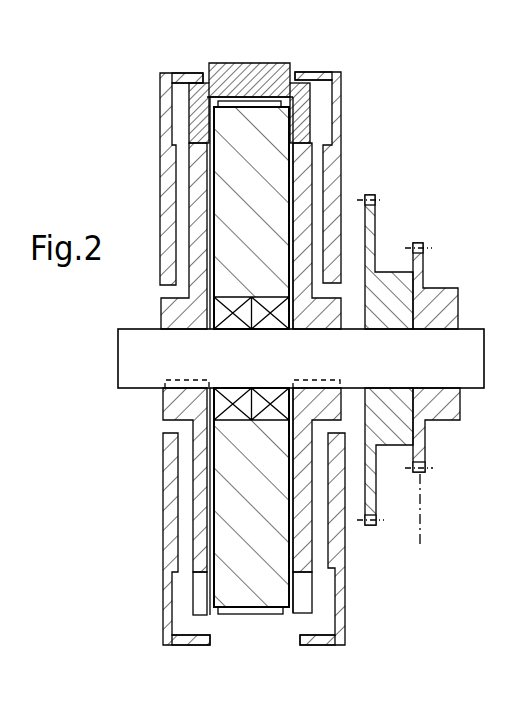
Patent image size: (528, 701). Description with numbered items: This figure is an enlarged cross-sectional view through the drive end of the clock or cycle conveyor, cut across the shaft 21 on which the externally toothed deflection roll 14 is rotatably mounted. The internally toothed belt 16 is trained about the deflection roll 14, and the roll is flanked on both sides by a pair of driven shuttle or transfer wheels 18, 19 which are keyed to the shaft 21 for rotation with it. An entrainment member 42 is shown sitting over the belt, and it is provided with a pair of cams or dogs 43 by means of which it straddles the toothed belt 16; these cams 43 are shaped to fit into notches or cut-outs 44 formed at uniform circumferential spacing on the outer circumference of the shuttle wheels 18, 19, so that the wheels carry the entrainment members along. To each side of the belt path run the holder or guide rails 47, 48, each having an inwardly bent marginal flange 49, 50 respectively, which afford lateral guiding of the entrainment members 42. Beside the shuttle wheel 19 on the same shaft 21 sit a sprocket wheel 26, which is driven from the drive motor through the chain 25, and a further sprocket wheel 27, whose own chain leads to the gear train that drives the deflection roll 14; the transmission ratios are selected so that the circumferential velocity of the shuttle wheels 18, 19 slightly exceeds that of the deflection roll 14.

The deflection roll 14 is at (272, 193).
The toothed belt 16 is at (305, 92).
The shuttle wheel 18 is at (191, 168).
The shuttle wheel 19 is at (310, 216).
The shaft 21 is at (471, 376).
The chain 25 is at (424, 500).
The sprocket wheel 26 is at (437, 297).
The sprocket wheel 27 is at (373, 224).
The entrainment member 42 is at (256, 63).
The cam 43 is at (303, 112).
The notch 44 is at (203, 610).
The guide rail 47 is at (163, 116).
The guide rail 48 is at (336, 126).
The flange 49 is at (183, 72).
The flange 50 is at (313, 73).